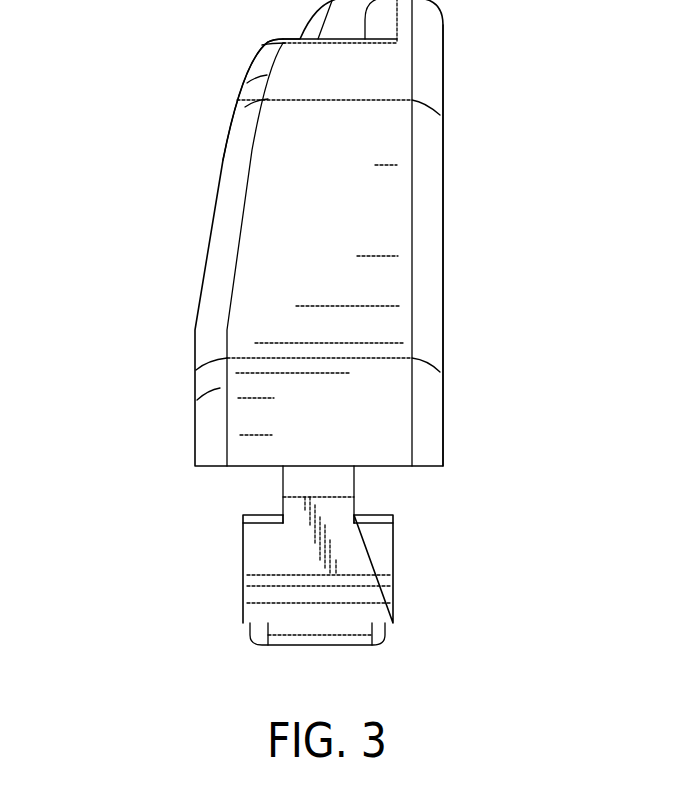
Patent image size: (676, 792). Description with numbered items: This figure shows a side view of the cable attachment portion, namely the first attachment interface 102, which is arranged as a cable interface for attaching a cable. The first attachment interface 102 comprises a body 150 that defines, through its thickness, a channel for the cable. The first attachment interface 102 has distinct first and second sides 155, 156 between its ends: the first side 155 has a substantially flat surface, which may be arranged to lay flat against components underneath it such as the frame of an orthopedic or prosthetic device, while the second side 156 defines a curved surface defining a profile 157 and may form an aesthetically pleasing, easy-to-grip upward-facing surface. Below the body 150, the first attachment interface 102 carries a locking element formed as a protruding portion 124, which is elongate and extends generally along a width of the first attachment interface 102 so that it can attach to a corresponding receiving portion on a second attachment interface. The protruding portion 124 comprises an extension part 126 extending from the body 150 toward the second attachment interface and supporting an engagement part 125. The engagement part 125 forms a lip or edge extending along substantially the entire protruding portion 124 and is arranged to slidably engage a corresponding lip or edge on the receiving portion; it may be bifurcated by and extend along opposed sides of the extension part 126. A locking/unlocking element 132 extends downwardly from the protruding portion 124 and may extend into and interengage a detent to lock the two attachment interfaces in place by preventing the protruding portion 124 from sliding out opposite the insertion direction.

The first attachment interface 102 is at (200, 325).
The protruding portion 124 is at (255, 495).
The engagement part 125 is at (365, 558).
The extension part 126 is at (335, 485).
The locking/unlocking element 132 is at (390, 628).
The body 150 is at (375, 415).
The first side 155 is at (443, 188).
The second side 156 is at (215, 197).
The profile 157 is at (202, 262).